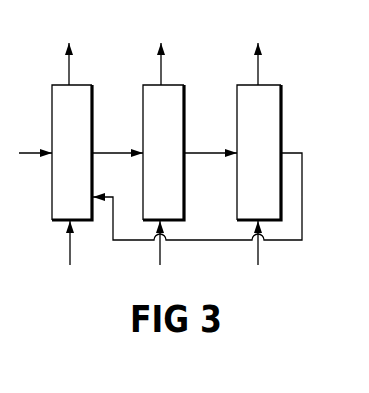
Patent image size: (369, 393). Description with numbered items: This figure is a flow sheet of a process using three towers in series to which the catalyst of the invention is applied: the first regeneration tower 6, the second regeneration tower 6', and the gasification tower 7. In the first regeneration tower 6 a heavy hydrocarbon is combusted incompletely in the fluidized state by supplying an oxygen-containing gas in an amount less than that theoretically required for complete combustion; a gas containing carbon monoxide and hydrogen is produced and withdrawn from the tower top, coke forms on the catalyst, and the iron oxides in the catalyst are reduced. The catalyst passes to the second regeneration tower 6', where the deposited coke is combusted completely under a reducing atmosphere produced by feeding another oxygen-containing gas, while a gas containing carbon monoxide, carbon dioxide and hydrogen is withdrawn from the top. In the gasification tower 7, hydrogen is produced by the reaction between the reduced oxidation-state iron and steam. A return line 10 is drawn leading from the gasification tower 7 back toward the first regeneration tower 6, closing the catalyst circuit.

The first regeneration tower 6 is at (64, 156).
The second regeneration tower 6' is at (154, 156).
The gasification tower 7 is at (276, 96).
The recycle line 10 is at (304, 221).